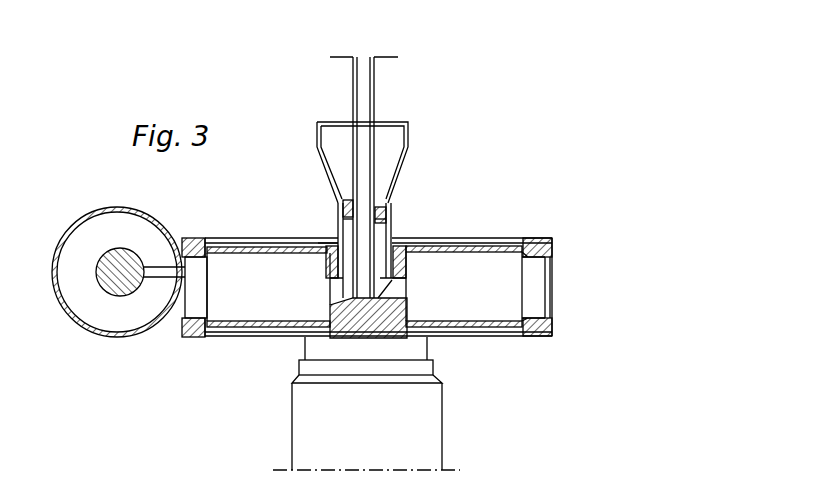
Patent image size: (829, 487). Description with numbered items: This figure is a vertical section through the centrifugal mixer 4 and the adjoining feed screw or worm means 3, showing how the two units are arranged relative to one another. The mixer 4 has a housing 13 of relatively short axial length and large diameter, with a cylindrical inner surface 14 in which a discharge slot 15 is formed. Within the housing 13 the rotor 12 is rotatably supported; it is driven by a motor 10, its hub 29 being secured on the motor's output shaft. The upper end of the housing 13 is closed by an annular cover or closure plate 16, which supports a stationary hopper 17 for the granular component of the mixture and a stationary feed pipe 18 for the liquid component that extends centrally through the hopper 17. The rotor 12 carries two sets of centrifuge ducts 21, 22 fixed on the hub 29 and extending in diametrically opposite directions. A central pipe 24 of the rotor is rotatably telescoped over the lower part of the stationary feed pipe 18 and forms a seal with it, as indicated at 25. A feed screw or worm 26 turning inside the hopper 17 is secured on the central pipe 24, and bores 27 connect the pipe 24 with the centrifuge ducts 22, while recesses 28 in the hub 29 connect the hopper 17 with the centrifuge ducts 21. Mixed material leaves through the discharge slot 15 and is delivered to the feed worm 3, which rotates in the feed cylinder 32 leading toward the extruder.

The feed screw or worm means 3 is at (115, 252).
The mixer 4 is at (558, 341).
The motor 10 is at (366, 403).
The rotor 12 is at (497, 327).
The housing 13 is at (552, 283).
The cylindrical inner surface 14 is at (542, 295).
The discharge slot 15 is at (182, 310).
The annular cover or closure plate 16 is at (460, 237).
The stationary hopper 17 is at (407, 150).
The stationary feed pipe 18 is at (372, 100).
The centrifuge ducts 21 is at (247, 302).
The centrifuge ducts 22 is at (498, 262).
The central pipe 24 is at (325, 237).
The seal 25 is at (350, 215).
The feed screw or worm 26 is at (383, 217).
The bores 27 is at (392, 292).
The recesses 28 is at (337, 292).
The hub 29 is at (400, 335).
The feed cylinder 32 is at (67, 235).